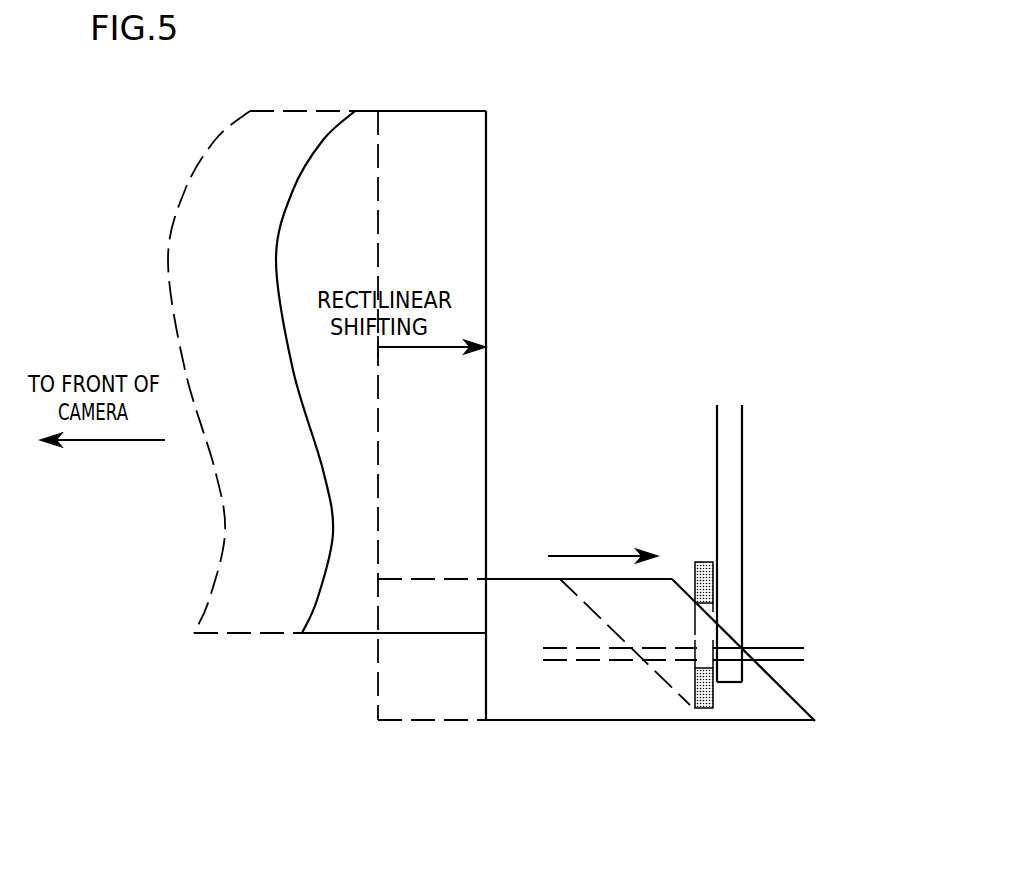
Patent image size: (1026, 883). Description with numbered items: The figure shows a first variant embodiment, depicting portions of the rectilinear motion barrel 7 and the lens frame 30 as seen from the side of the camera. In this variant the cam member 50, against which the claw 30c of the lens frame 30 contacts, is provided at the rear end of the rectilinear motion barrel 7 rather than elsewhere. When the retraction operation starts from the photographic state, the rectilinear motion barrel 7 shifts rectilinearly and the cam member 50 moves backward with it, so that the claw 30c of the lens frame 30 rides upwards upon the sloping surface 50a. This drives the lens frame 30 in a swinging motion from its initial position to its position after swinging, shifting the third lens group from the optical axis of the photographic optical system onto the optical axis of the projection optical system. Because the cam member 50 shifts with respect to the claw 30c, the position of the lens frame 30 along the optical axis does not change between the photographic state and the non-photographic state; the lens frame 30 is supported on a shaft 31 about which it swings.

The rectilinear motion barrel 7 is at (344, 371).
The lens frame 30 is at (728, 475).
The claw 30c is at (682, 790).
The pivot shaft 31 is at (780, 655).
The cam member 50 is at (552, 700).
The sloping surface 50a is at (797, 700).